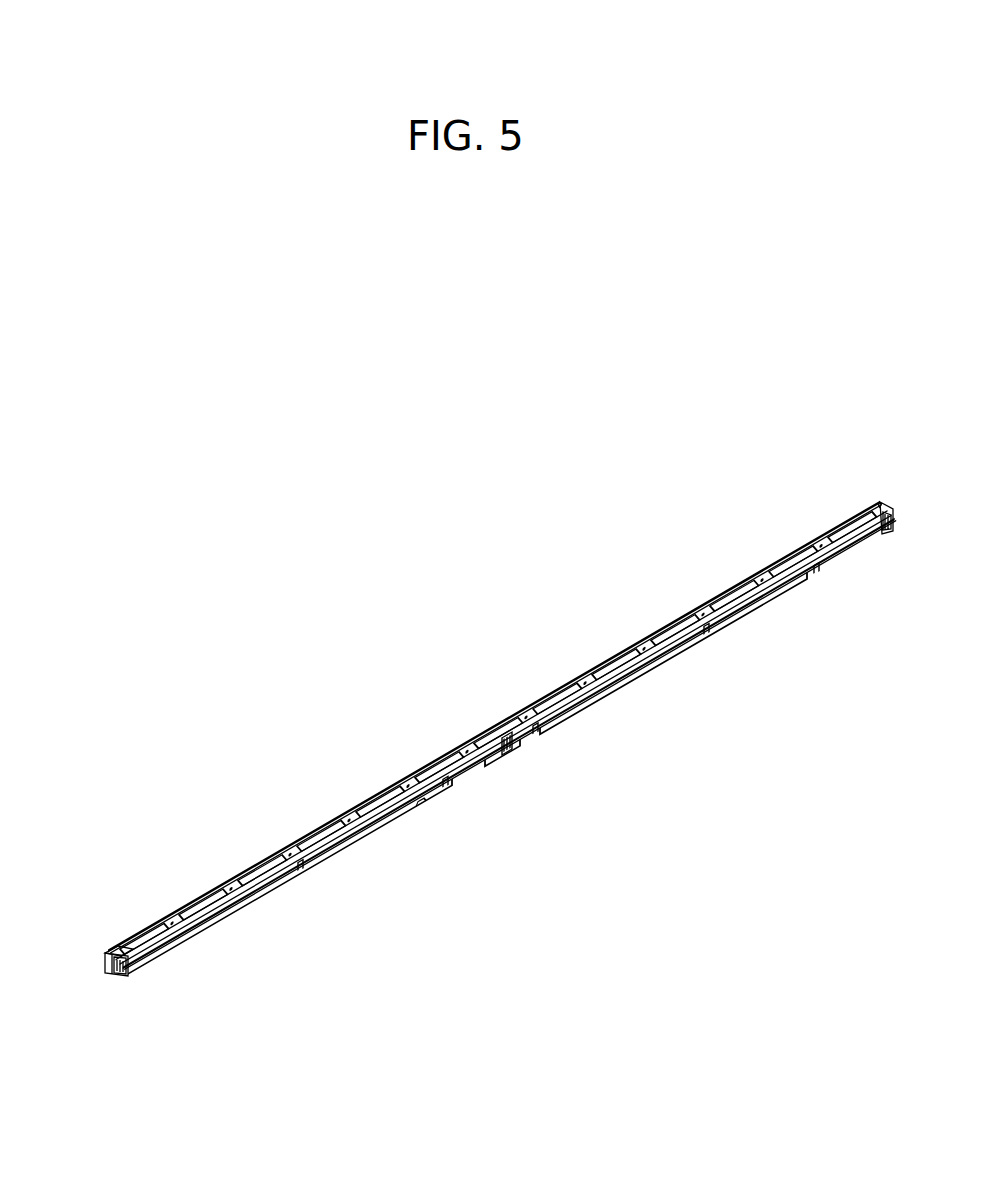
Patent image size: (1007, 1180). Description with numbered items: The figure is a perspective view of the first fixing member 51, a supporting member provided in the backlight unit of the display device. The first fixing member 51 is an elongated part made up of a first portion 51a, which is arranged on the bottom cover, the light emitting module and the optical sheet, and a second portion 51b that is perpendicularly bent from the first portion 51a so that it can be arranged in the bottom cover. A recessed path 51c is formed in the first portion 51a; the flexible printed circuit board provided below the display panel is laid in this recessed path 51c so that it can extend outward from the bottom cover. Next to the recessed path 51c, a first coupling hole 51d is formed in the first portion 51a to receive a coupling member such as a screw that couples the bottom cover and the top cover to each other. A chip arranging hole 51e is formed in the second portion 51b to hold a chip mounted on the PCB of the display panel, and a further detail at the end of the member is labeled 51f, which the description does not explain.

The first fixing member 51 is at (421, 723).
The first portion 51a is at (85, 950).
The second portion 51b is at (118, 975).
The recessed path 51c is at (528, 708).
The first coupling hole 51d is at (374, 803).
The chip arranging hole 51e is at (712, 631).
The end bracket 51f is at (128, 976).